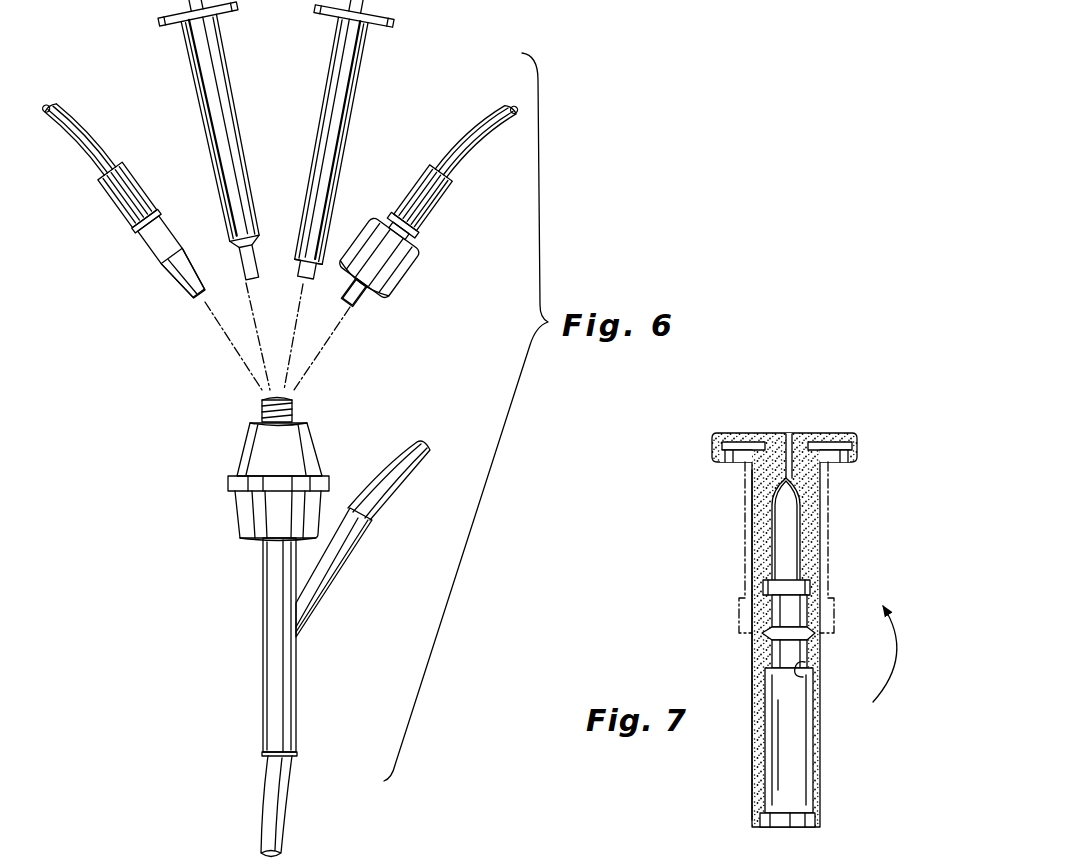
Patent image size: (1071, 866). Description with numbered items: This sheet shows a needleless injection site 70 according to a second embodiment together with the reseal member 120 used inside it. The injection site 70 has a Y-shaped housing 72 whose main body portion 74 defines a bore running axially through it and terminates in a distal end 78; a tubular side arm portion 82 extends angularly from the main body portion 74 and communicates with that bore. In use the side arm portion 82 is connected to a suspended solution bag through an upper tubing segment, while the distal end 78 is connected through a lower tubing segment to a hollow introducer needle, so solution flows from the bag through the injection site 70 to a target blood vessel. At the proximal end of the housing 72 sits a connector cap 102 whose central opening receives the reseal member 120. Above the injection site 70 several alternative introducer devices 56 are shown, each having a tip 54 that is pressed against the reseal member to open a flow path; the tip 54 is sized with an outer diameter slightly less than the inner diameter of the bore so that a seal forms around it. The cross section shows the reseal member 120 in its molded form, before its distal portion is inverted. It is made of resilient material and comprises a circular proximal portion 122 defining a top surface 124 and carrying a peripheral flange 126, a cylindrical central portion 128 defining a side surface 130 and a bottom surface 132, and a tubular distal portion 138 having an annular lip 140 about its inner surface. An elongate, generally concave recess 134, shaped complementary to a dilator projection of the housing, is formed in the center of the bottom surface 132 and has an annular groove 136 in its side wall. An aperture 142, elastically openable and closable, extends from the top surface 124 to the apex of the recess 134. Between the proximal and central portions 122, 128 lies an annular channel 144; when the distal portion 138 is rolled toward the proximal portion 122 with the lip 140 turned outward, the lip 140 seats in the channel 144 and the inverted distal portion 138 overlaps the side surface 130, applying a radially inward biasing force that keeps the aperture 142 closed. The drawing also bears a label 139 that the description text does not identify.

In FIG. 6, the introducer device 56 is at (167, 222).
In FIG. 6, the tip 54 is at (213, 312).
In FIG. 6, the needleless injection site 70 is at (271, 609).
In FIG. 6, the connector cap 102 is at (316, 432).
In FIG. 6, the Y-shaped housing 72 is at (235, 526).
In FIG. 6, the main body portion 74 is at (277, 662).
In FIG. 6, the distal end 78 is at (300, 782).
In FIG. 6, the tubular side arm portion 82 is at (347, 560).
In FIG. 7, the reseal member 120 is at (766, 612).
In FIG. 7, the proximal portion 122 is at (779, 612).
In FIG. 7, the top surface 124 is at (745, 433).
In FIG. 7, the aperture 142 is at (792, 443).
In FIG. 7, the annular channel 144 is at (733, 460).
In FIG. 7, the flange 126 is at (857, 455).
In FIG. 7, the side surface 130 is at (752, 527).
In FIG. 7, the central portion 128 is at (824, 551).
In FIG. 7, the recess 134 is at (787, 537).
In FIG. 7, the annular groove 136 is at (763, 586).
In FIG. 7, the bottom surface 132 is at (762, 635).
In FIG. 7, the shoulder 139 is at (803, 677).
In FIG. 7, the tubular distal portion 138 is at (820, 748).
In FIG. 7, the annular lip 140 is at (807, 825).